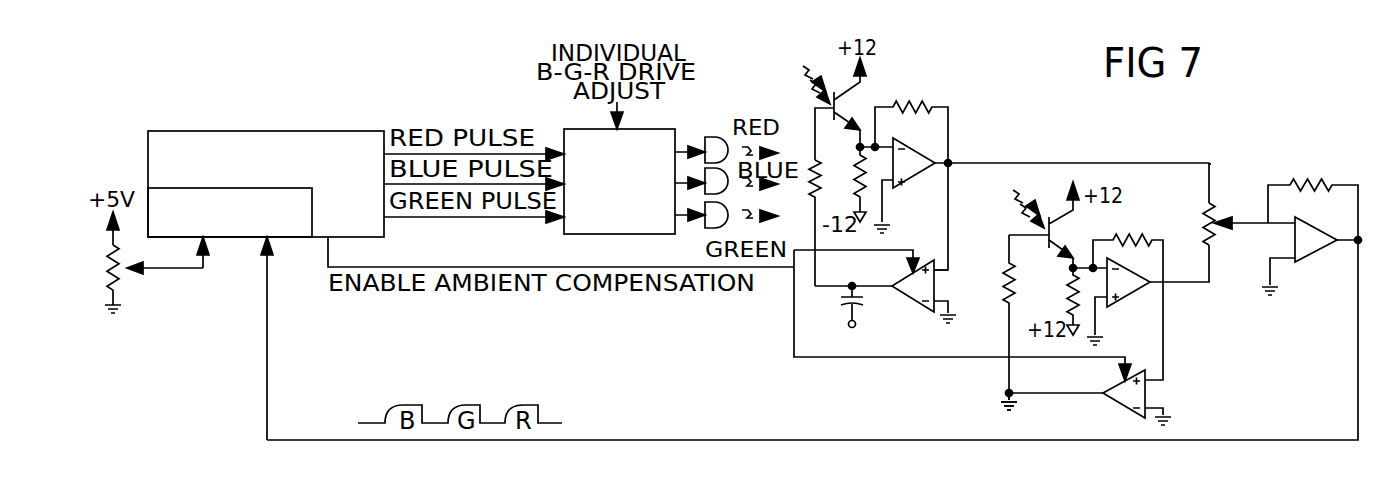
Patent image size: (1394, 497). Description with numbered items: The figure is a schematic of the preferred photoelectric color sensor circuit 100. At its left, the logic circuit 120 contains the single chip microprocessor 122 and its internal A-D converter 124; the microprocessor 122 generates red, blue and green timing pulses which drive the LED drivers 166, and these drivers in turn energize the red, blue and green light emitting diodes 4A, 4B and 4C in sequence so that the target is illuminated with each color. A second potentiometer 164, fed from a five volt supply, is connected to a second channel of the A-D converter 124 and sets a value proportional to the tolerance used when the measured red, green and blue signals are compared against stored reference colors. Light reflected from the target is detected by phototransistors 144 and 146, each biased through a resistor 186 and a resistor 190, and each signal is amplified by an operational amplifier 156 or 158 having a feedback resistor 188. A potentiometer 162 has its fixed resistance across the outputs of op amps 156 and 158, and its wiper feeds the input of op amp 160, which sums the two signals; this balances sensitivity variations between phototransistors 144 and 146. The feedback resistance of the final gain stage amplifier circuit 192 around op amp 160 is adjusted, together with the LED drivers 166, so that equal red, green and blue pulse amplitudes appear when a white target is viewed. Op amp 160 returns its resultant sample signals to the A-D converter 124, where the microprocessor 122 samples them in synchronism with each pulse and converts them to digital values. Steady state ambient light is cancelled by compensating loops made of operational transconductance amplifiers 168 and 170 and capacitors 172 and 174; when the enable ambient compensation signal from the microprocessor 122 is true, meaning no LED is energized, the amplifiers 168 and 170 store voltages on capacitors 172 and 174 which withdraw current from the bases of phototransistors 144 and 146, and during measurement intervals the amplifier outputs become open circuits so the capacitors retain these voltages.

The color sensing circuit 100 is at (1222, 138).
The logic circuit 120 is at (326, 110).
The microprocessor 122 is at (218, 131).
The A-D converter 124 is at (232, 238).
The second potentiometer 164 is at (117, 284).
The LED drivers 166 is at (577, 234).
The red LED 4A is at (710, 137).
The green LED 4B is at (705, 225).
The blue LED 4C is at (705, 198).
The phototransistor 144 is at (842, 88).
The phototransistor 146 is at (1058, 212).
The resistor 186 is at (808, 170).
The resistor 190 is at (857, 180).
The resistor 188 is at (898, 105).
The operational amplifier 156 is at (920, 189).
The operational amplifier 158 is at (1128, 302).
The operational transconductance amplifier 168 is at (910, 298).
The operational transconductance amplifier 170 is at (1115, 400).
The capacitor 172 is at (848, 306).
The capacitor 174 is at (1000, 406).
The potentiometer 162 is at (1215, 213).
The final gain stage amplifier circuit 192 is at (1300, 185).
The operational amplifier 160 is at (1325, 253).